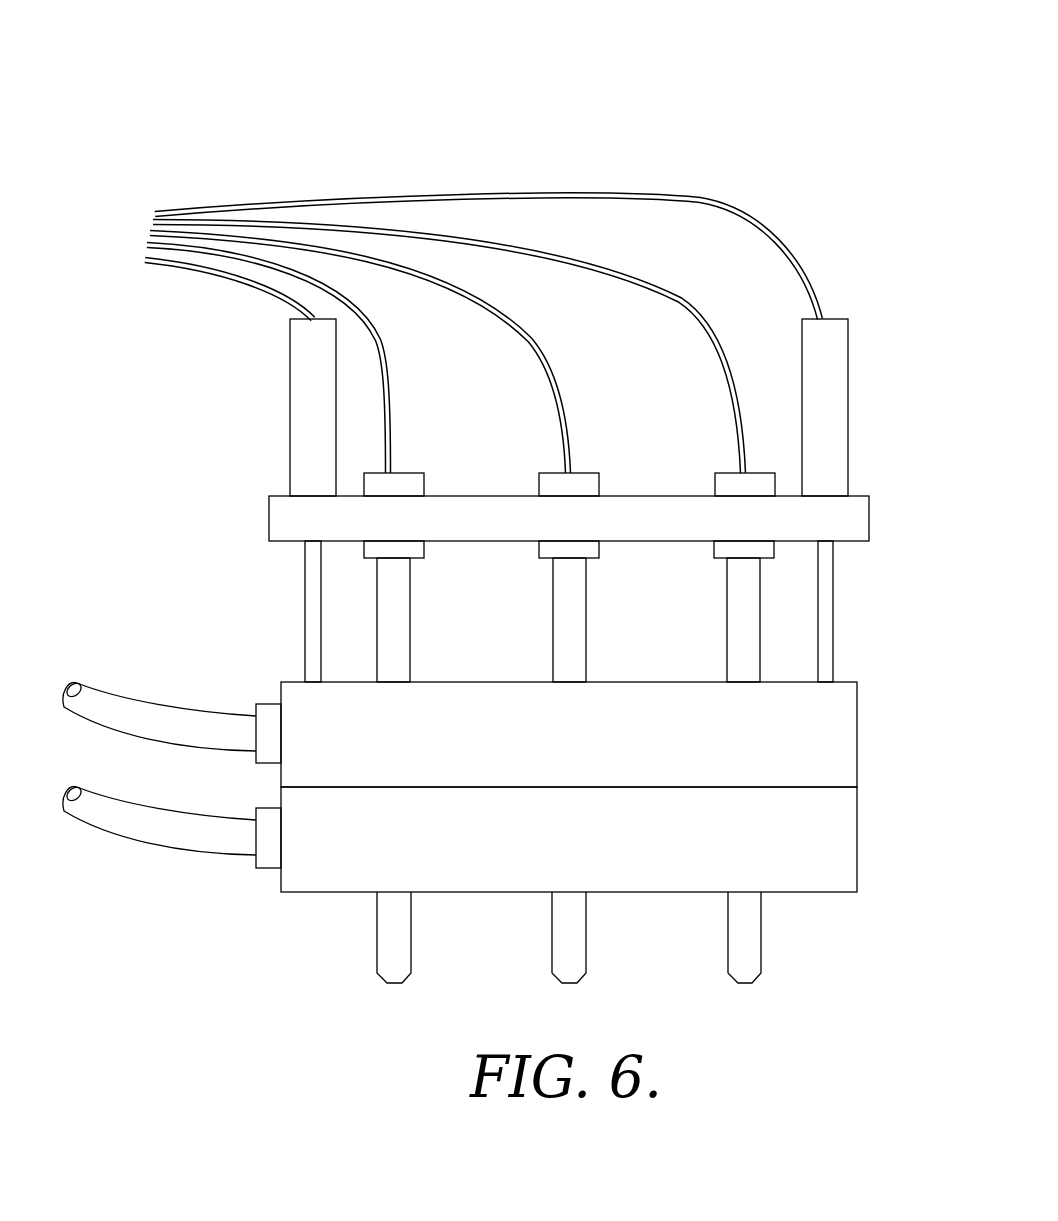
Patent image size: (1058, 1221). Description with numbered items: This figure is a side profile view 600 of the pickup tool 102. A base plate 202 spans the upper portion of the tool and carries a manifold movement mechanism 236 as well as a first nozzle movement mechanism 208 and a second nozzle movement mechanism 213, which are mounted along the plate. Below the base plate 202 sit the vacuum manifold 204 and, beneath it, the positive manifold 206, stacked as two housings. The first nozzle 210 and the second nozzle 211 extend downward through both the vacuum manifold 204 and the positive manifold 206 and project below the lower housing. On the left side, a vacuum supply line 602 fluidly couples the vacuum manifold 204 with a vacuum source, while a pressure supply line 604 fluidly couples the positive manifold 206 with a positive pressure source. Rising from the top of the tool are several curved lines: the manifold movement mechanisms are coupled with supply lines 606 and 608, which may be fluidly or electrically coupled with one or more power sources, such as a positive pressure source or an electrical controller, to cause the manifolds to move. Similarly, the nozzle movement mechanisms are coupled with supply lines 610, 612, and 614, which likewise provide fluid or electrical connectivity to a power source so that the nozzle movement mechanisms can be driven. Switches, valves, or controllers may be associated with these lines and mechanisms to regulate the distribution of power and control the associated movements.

The side profile view 600 is at (316, 46).
The pickup tool 102 is at (96, 190).
The supply line 606 is at (252, 284).
The supply line 608 is at (745, 213).
The supply line 610 is at (379, 323).
The supply line 612 is at (529, 333).
The supply line 614 is at (674, 293).
The manifold movement mechanism 236 is at (289, 410).
The first nozzle movement mechanism 208 is at (429, 480).
The second nozzle movement mechanism 213 is at (601, 480).
The base plate 202 is at (870, 517).
The vacuum manifold 204 is at (858, 733).
The positive manifold 206 is at (858, 832).
The vacuum supply line 602 is at (149, 705).
The pressure supply line 604 is at (116, 793).
The first nozzle 210 is at (380, 951).
The second nozzle 211 is at (553, 951).